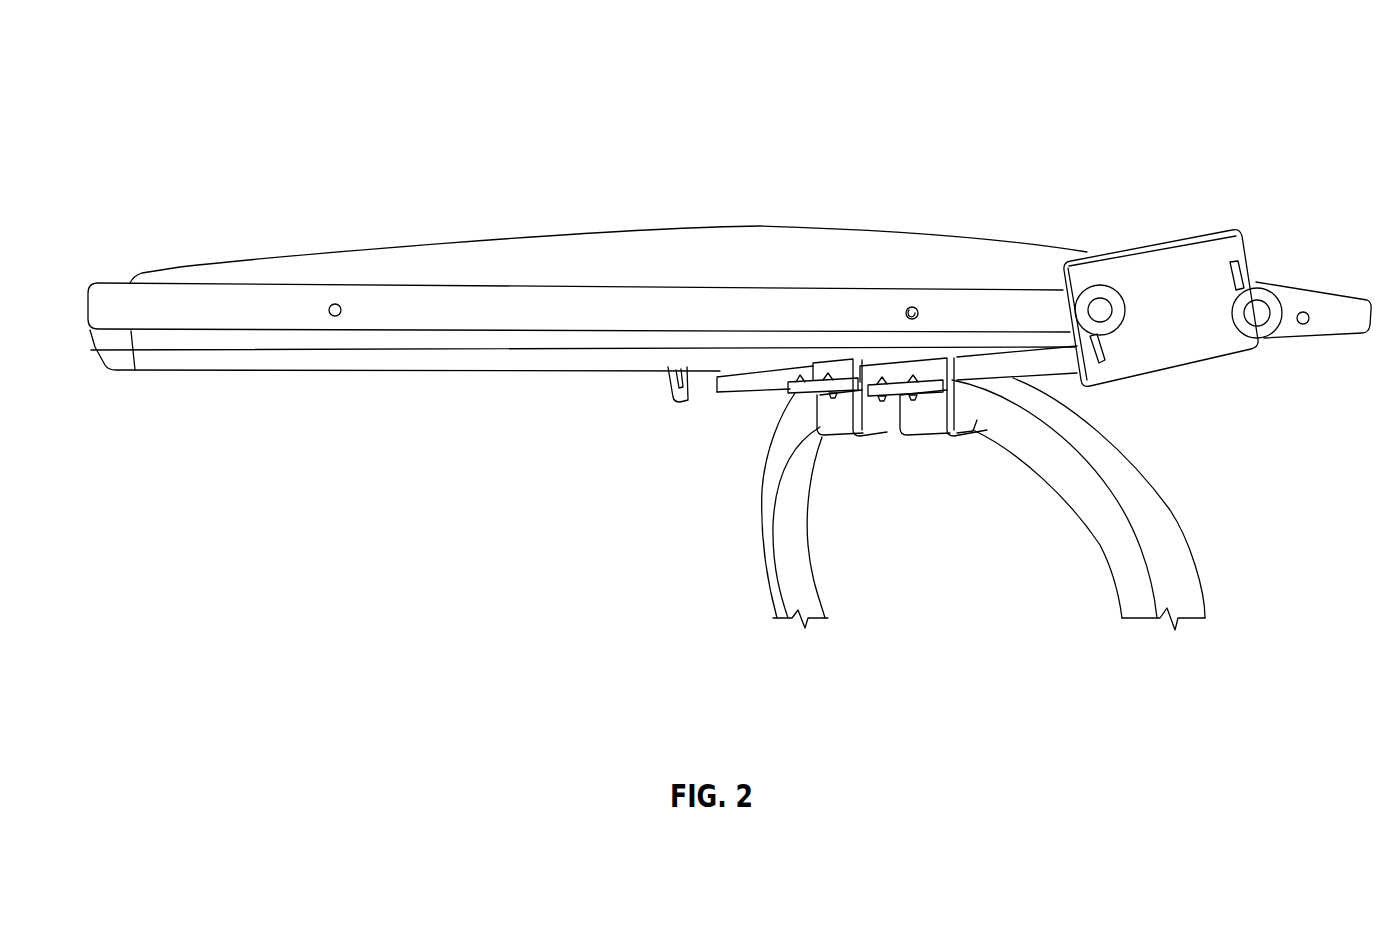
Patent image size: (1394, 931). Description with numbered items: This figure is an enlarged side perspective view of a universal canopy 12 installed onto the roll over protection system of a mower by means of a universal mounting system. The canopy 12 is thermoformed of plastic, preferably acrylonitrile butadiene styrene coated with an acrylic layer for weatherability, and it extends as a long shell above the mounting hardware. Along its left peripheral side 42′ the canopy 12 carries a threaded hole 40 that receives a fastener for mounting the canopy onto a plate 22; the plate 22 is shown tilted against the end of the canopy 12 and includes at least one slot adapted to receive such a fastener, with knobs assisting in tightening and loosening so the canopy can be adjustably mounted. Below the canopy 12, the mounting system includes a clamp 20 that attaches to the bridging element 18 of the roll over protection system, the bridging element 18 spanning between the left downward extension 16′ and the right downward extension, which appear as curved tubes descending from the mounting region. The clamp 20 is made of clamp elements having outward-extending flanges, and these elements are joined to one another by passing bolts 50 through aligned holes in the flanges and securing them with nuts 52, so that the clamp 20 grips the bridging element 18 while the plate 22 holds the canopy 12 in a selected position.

The canopy 12 is at (710, 240).
The left peripheral side 42′ is at (458, 308).
The hole 40 is at (920, 312).
The plate 22 is at (1177, 260).
The nut 52 is at (770, 382).
The bolt 50 is at (822, 397).
The clamp 20 is at (937, 427).
The bridging element 18 is at (987, 423).
The left downward extension 16′ is at (1173, 572).